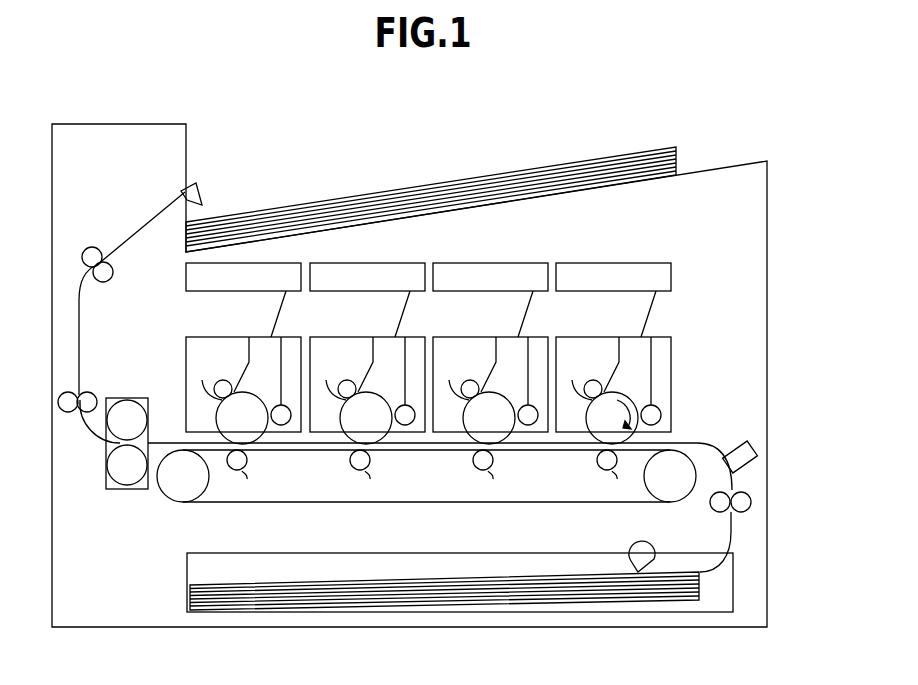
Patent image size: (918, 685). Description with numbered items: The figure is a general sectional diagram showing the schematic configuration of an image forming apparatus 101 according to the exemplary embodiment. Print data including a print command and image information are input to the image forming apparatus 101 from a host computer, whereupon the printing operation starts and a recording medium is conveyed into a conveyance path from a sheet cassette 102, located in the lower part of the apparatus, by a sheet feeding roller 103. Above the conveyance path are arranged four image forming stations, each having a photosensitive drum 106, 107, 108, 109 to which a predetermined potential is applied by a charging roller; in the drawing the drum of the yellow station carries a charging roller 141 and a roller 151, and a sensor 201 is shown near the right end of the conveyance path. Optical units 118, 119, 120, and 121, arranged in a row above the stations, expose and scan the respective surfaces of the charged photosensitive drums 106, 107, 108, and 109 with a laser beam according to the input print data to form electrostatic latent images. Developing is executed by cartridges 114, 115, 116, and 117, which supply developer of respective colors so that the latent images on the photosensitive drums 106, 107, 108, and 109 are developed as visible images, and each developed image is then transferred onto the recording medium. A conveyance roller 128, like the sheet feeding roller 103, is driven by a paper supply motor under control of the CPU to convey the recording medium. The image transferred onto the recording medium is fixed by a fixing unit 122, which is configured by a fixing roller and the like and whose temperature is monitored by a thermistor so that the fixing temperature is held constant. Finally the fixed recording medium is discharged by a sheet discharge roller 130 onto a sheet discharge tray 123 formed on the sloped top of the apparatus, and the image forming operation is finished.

The image forming apparatus 101 is at (768, 262).
The sheet cassette 102 is at (352, 565).
The sheet feeding roller 103 is at (630, 549).
The photosensitive drum 106 is at (622, 398).
The photosensitive drum 107 is at (505, 434).
The photosensitive drum 108 is at (382, 434).
The photosensitive drum 109 is at (258, 434).
The cartridge 114 is at (581, 336).
The cartridge 115 is at (458, 336).
The cartridge 116 is at (335, 336).
The cartridge 117 is at (212, 336).
The optical unit 118 is at (643, 263).
The optical unit 119 is at (520, 263).
The optical unit 120 is at (392, 263).
The optical unit 121 is at (186, 268).
The fixing unit 122 is at (128, 398).
The sheet discharge tray 123 is at (342, 198).
The conveyance roller 128 is at (745, 512).
The sheet discharge roller 130 is at (108, 284).
The charging roller 141 is at (593, 380).
The developing roller 151 is at (660, 408).
The sensor 201 is at (741, 440).